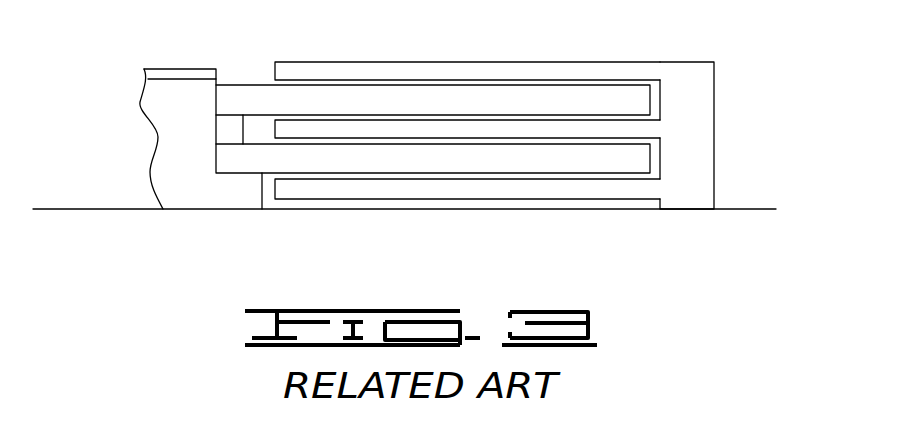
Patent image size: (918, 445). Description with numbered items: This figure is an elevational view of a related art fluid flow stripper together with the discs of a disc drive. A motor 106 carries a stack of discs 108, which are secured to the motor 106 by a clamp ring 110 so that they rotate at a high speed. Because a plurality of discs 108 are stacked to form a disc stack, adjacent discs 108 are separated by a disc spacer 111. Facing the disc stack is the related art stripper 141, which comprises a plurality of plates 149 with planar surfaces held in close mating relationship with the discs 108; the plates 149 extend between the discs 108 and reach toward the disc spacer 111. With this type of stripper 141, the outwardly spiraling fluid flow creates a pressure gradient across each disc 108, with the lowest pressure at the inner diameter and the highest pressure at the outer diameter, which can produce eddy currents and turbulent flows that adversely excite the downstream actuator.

The motor 106 is at (163, 180).
The clamp ring 110 is at (165, 69).
The disc spacer 111 is at (230, 132).
The discs 108 is at (398, 98).
The plates 149 is at (507, 70).
The related art stripper 141 is at (715, 111).